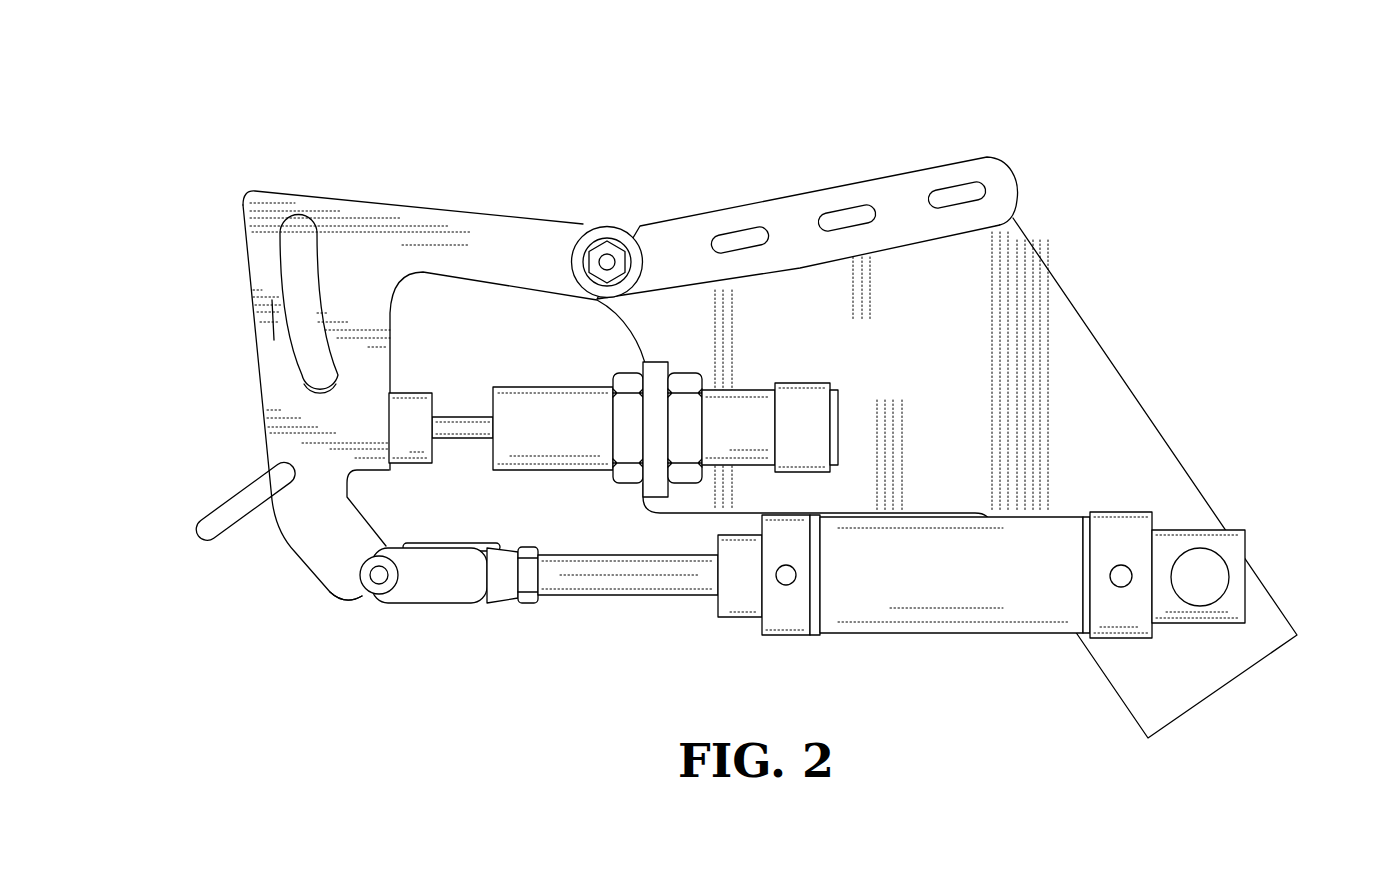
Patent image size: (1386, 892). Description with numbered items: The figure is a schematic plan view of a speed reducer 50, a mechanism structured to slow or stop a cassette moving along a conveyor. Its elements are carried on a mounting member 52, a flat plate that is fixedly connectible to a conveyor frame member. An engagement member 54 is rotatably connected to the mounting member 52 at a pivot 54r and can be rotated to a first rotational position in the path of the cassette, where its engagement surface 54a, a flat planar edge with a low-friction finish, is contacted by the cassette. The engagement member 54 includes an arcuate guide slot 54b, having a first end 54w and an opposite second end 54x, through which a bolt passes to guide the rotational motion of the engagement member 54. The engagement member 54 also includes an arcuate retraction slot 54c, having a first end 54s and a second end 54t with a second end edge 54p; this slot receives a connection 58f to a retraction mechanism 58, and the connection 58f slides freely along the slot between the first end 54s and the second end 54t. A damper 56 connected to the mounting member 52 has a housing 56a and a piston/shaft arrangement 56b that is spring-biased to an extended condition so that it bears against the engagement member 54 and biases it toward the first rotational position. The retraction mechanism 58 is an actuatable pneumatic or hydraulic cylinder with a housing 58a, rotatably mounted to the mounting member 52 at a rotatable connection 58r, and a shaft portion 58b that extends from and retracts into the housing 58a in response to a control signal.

The speed reducer 50 is at (1141, 124).
The mounting member 52 is at (1114, 372).
The engagement member 54 is at (584, 356).
The engagement surface 54a is at (403, 207).
The guide slot 54b is at (287, 338).
The retraction slot 54c is at (320, 528).
The second end edge 54p is at (284, 463).
The pivot 54r is at (607, 262).
The first end 54s is at (352, 562).
The second end 54t is at (288, 462).
The first end 54w is at (320, 388).
The second end 54x is at (300, 238).
The damper 56 is at (613, 406).
The housing 56a is at (561, 410).
The piston/shaft arrangement 56b is at (463, 430).
The retraction mechanism 58 is at (827, 618).
The housing 58a is at (915, 580).
The shaft portion 58b is at (608, 578).
The connection 58f is at (375, 592).
The rotatable connection 58r is at (1207, 575).